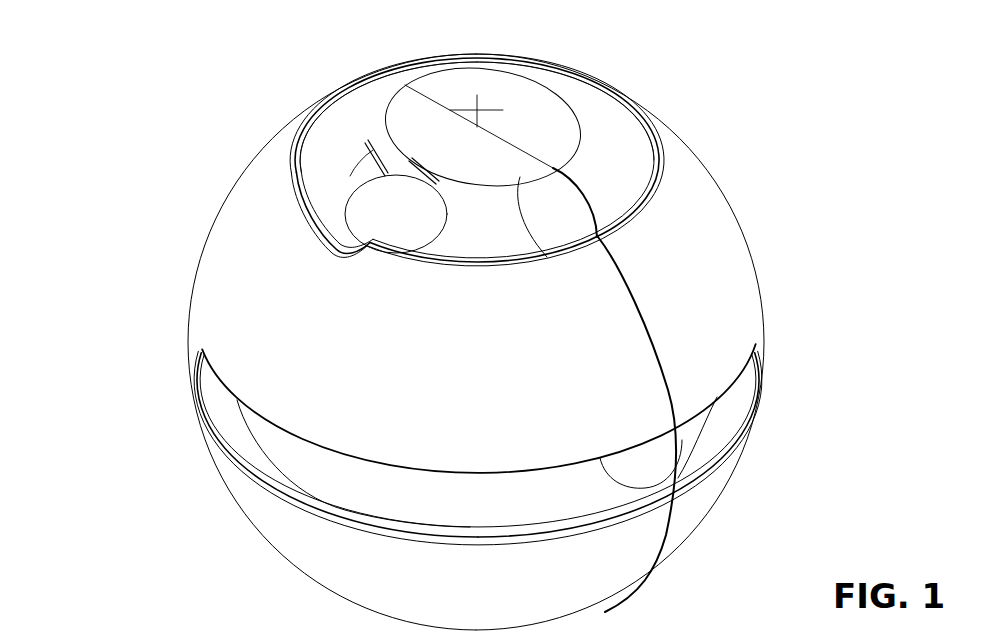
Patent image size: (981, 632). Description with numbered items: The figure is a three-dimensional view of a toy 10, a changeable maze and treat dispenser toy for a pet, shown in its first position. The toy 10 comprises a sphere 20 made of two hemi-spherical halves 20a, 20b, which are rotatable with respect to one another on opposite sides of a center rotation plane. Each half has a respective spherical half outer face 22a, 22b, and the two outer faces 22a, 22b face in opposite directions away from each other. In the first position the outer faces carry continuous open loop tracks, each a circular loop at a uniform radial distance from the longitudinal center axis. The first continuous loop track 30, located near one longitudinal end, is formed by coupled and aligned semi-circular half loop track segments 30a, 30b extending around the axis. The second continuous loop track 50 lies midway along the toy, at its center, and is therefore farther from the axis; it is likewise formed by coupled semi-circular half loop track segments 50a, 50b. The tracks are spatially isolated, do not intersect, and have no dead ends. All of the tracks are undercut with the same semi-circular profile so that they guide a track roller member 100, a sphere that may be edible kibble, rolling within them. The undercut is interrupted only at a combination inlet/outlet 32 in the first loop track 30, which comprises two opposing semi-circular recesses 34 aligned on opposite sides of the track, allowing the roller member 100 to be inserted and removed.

The toy 10 is at (116, 61).
The sphere 20 is at (585, 44).
The first spherical half 20a is at (158, 190).
The second spherical half 20b is at (800, 156).
The first spherical half outer face 22a is at (205, 265).
The second spherical half outer face 22b is at (746, 209).
The first continuous loop track 30 is at (603, 99).
The first half loop track segment 30a is at (330, 163).
The second half loop track segment 30b is at (597, 138).
The combination inlet/outlet 32 is at (376, 145).
The semi-circular recesses 34 is at (423, 159).
The second continuous loop track 50 is at (190, 366).
The first half loop track segment of second track 50a is at (330, 465).
The second half loop track segment of second track 50b is at (723, 402).
The track roller member 100 is at (398, 217).